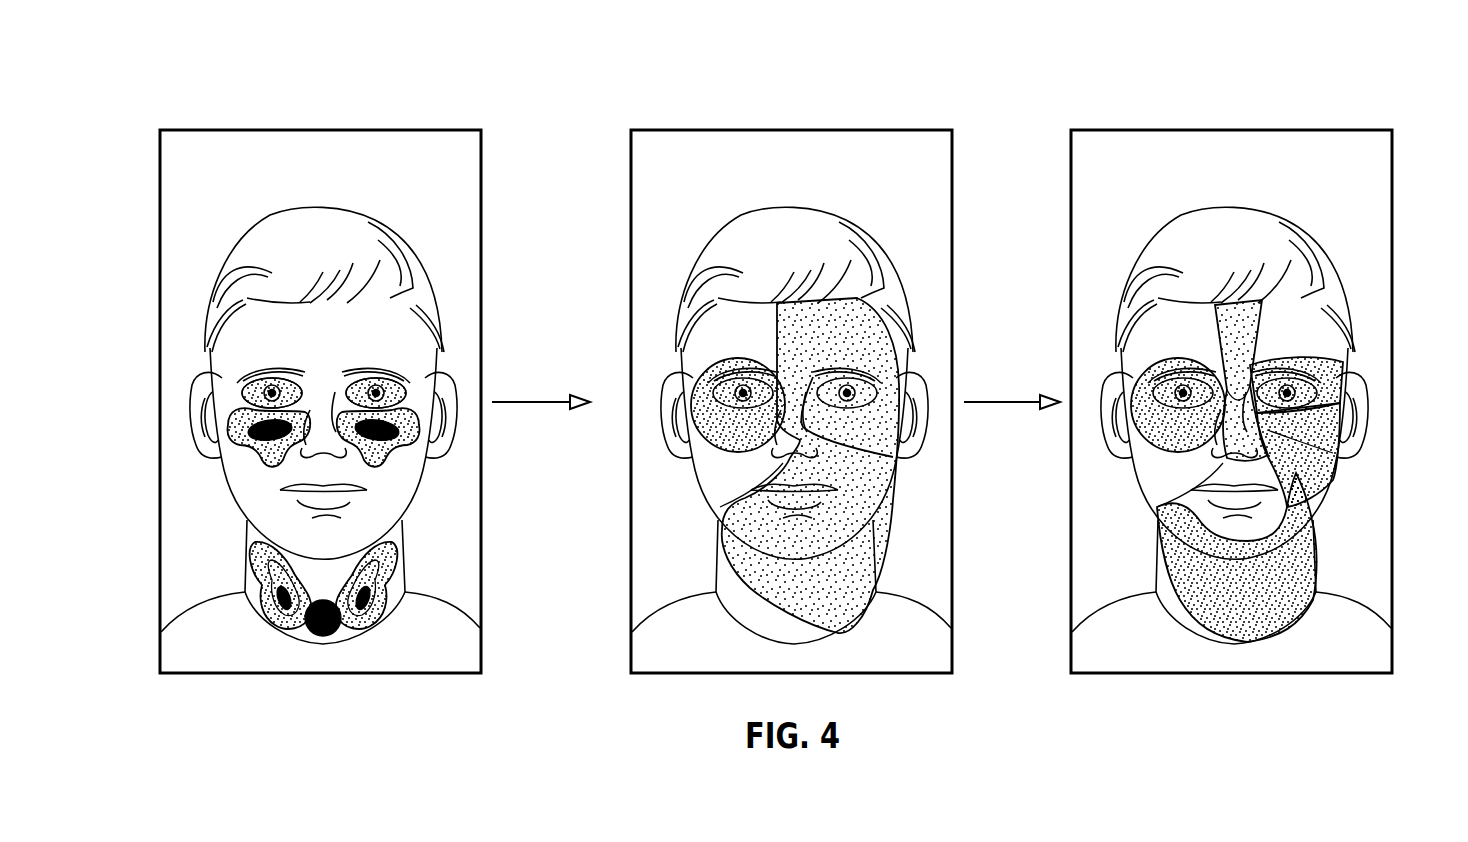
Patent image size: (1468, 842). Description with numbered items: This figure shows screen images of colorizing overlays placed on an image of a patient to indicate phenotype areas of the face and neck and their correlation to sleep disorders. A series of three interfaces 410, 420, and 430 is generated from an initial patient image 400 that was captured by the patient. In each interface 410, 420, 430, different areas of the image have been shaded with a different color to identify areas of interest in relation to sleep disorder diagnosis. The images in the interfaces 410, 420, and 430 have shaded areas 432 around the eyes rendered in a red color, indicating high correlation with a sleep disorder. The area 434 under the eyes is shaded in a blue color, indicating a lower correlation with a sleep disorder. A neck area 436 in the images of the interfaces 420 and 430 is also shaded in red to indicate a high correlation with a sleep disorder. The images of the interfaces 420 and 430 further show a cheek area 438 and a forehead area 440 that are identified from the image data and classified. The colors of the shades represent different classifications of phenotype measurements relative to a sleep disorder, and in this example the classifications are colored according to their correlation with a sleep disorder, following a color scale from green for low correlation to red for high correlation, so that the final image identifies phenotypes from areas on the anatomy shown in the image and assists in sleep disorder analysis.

The initial patient image 400 is at (290, 317).
The interface 410 is at (285, 375).
The interface 420 is at (651, 186).
The interface 430 is at (1091, 186).
The shaded areas around the eyes 432 is at (240, 369).
The area under the eyes 434 is at (263, 455).
The neck area 436 is at (262, 577).
The cheek area 438 is at (848, 473).
The forehead area 440 is at (761, 317).